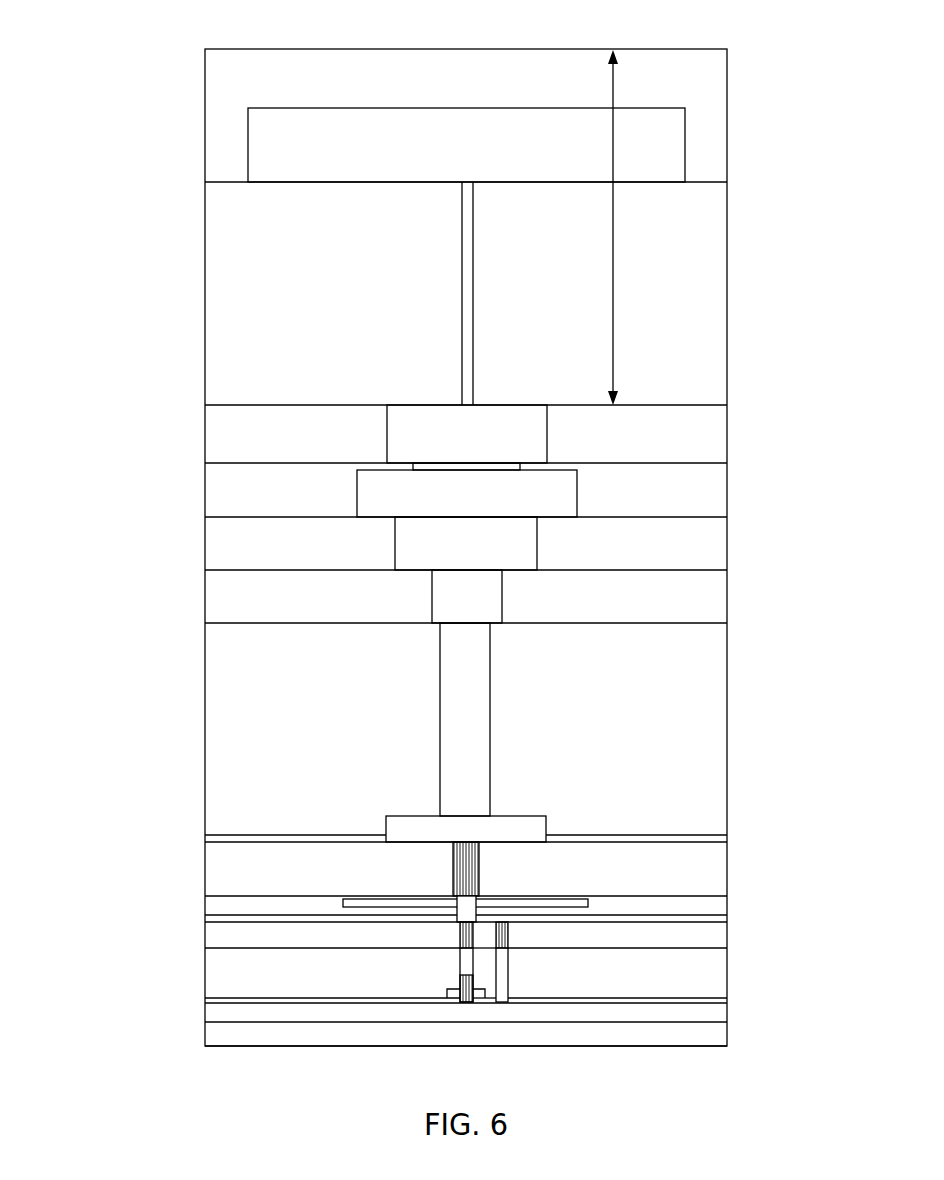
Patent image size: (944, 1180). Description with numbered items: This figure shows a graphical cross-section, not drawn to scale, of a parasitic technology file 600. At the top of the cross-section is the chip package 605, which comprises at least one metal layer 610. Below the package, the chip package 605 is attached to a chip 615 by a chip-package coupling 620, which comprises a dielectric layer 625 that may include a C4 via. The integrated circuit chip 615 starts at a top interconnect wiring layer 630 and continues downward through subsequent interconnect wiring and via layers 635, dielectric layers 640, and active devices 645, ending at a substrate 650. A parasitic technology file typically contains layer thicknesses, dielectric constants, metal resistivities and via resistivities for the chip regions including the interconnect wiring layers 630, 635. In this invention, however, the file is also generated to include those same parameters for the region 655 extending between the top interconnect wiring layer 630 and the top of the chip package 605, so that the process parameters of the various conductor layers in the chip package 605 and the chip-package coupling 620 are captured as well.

The parasitic technology file 600 is at (96, 73).
The chip package 605 is at (745, 48).
The metal layer 610 is at (300, 128).
The chip 615 is at (745, 406).
The chip-package coupling 620 is at (745, 183).
The dielectric layer 625 is at (293, 246).
The top interconnect wiring layer 630 is at (402, 417).
The interconnect wiring and via layers 635 is at (448, 592).
The dielectric layers 640 is at (248, 532).
The active devices 645 is at (460, 981).
The substrate 650 is at (267, 1031).
The region between the top interconnect wiring layer and the top of the chip package 655 is at (613, 292).